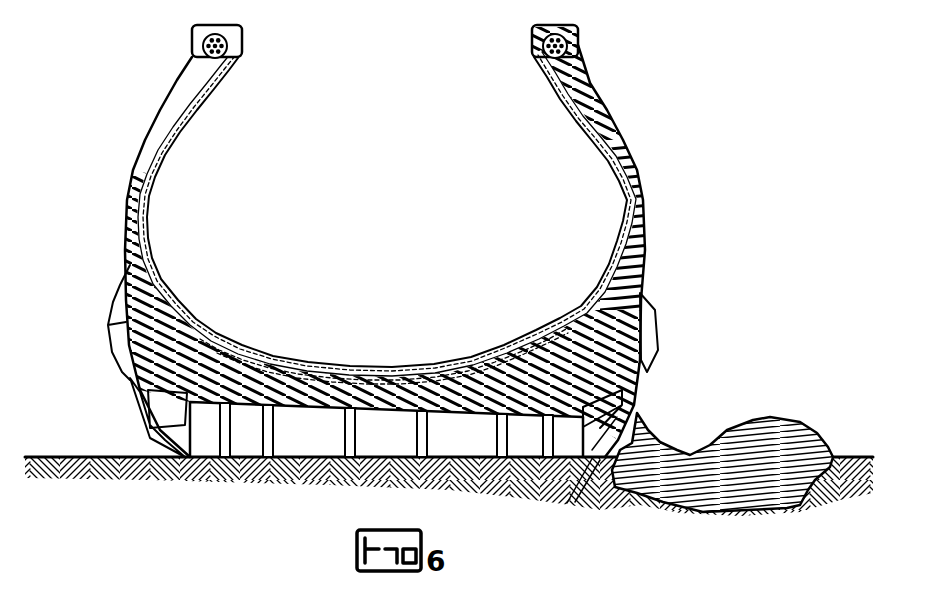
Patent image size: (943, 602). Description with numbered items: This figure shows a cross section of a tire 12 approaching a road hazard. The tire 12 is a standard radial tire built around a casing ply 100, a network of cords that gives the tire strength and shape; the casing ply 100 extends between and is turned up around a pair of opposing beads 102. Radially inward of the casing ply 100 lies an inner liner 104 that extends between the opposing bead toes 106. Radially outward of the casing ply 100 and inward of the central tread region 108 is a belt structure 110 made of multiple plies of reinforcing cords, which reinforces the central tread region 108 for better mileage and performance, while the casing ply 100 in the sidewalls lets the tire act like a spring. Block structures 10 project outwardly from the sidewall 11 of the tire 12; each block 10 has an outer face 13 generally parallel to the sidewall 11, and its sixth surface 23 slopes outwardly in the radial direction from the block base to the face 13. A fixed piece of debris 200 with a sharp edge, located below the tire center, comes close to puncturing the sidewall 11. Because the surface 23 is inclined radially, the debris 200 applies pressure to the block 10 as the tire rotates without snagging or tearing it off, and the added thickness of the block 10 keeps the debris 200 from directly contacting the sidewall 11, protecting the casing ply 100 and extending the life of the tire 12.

The tire 12 is at (126, 65).
The casing ply 100 is at (643, 200).
The beads 102 is at (573, 40).
The inner liner 104 is at (627, 173).
The bead toes 106 is at (532, 27).
The central tread region 108 is at (313, 435).
The belt structure 110 is at (327, 363).
The block structure 10 is at (110, 334).
The sidewall 11 is at (133, 298).
The face 13 is at (633, 386).
The sixth surface 23 is at (588, 462).
The debris 200 is at (652, 438).